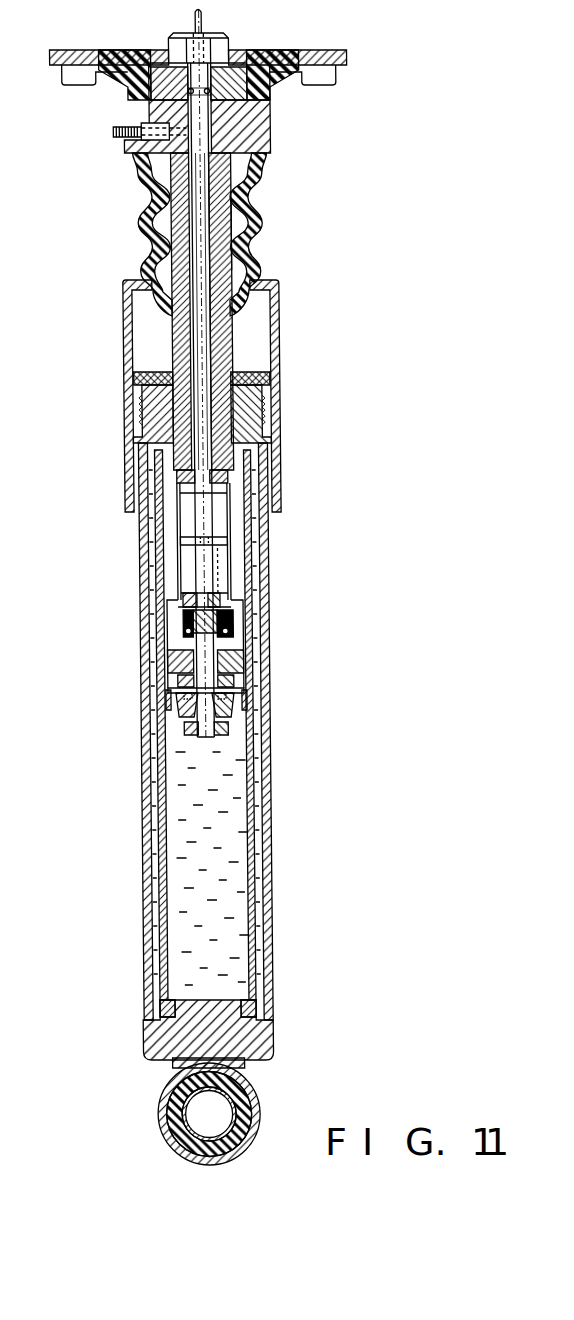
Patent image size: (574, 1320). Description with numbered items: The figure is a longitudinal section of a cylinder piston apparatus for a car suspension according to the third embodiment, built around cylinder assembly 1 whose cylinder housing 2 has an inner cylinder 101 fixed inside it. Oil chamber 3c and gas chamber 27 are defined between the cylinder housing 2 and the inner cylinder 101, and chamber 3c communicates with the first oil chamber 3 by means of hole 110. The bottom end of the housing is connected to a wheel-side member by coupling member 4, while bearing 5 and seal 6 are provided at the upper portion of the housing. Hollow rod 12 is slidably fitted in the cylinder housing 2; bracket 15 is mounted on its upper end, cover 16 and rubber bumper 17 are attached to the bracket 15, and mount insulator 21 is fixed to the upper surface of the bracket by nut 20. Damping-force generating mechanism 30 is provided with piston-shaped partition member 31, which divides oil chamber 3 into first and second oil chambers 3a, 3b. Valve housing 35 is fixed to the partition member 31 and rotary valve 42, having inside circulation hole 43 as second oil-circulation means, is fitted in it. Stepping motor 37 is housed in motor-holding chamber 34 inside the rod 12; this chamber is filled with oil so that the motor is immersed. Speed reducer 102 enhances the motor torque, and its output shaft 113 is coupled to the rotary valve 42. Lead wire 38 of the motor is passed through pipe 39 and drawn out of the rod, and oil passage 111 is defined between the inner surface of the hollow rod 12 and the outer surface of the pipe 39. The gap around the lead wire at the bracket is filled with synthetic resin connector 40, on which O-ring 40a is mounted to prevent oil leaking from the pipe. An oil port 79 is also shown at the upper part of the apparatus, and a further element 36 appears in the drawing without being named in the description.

The cylinder assembly 1 is at (112, 670).
The cylinder housing 2 is at (135, 818).
The first oil chamber 3 is at (229, 916).
The first oil chamber 3a is at (233, 763).
The second oil chamber 3b is at (234, 680).
The oil chamber 3c is at (252, 856).
The coupling member 4 is at (250, 1100).
The bearing 5 is at (157, 410).
The seal 6 is at (153, 385).
The hollow rod 12 is at (228, 337).
The bracket 15 is at (258, 132).
The cover 16 is at (285, 295).
The rubber bumper 17 is at (260, 196).
The nut 20 is at (224, 42).
The mount insulator 21 is at (256, 50).
The gas chamber 27 is at (251, 592).
The damping-force generating mechanism 30 is at (165, 737).
The piston-shaped partition member 31 is at (157, 711).
The motor-holding chamber 34 is at (175, 516).
The valve housing 35 is at (235, 662).
The valve body 36 is at (180, 676).
The stepping motor 37 is at (213, 522).
The lead wire 38 is at (205, 366).
The pipe 39 is at (208, 272).
The connector 40 is at (186, 102).
The O-ring 40a is at (186, 102).
The rotary valve 42 is at (228, 616).
The circulation hole 43 is at (173, 650).
The oil port 79 is at (111, 131).
The inner cylinder 101 is at (162, 920).
The speed reducer 102 is at (206, 566).
The hole 110 is at (239, 1004).
The oil passage 111 is at (212, 237).
The output shaft 113 is at (193, 594).